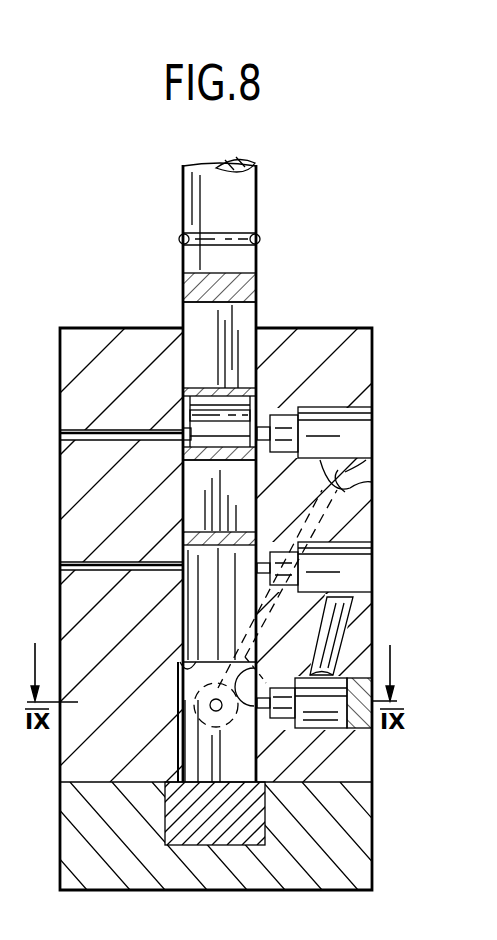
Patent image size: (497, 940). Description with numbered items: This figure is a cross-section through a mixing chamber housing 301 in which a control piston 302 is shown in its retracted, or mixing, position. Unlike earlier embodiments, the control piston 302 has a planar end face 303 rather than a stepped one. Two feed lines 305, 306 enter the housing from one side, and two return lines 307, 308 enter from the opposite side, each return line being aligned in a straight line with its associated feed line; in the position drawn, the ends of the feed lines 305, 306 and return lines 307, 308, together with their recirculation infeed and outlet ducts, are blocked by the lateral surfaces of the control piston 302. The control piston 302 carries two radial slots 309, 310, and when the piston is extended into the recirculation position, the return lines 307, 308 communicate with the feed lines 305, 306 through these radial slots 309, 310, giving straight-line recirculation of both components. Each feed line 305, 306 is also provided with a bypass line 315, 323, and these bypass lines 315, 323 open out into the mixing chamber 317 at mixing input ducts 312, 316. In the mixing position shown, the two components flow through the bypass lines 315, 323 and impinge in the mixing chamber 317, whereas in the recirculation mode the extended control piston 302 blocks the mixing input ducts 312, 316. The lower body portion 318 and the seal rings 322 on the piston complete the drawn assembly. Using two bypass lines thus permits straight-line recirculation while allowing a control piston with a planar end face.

The mixing chamber housing 301 is at (333, 340).
The control piston 302 is at (259, 198).
The planar end face 303 is at (184, 668).
The feed line 305 is at (374, 431).
The feed line 306 is at (358, 563).
The return line 307 is at (60, 436).
The return line 308 is at (60, 568).
The radial slot 309 is at (192, 321).
The radial slot 310 is at (192, 493).
The mixing input duct 312 is at (277, 589).
The bypass line 315 is at (374, 490).
The mixing input duct 316 is at (215, 706).
The mixing chamber 317 is at (235, 747).
The base member 318 is at (241, 784).
The seal ring 322 is at (258, 243).
The bypass line 323 is at (364, 627).